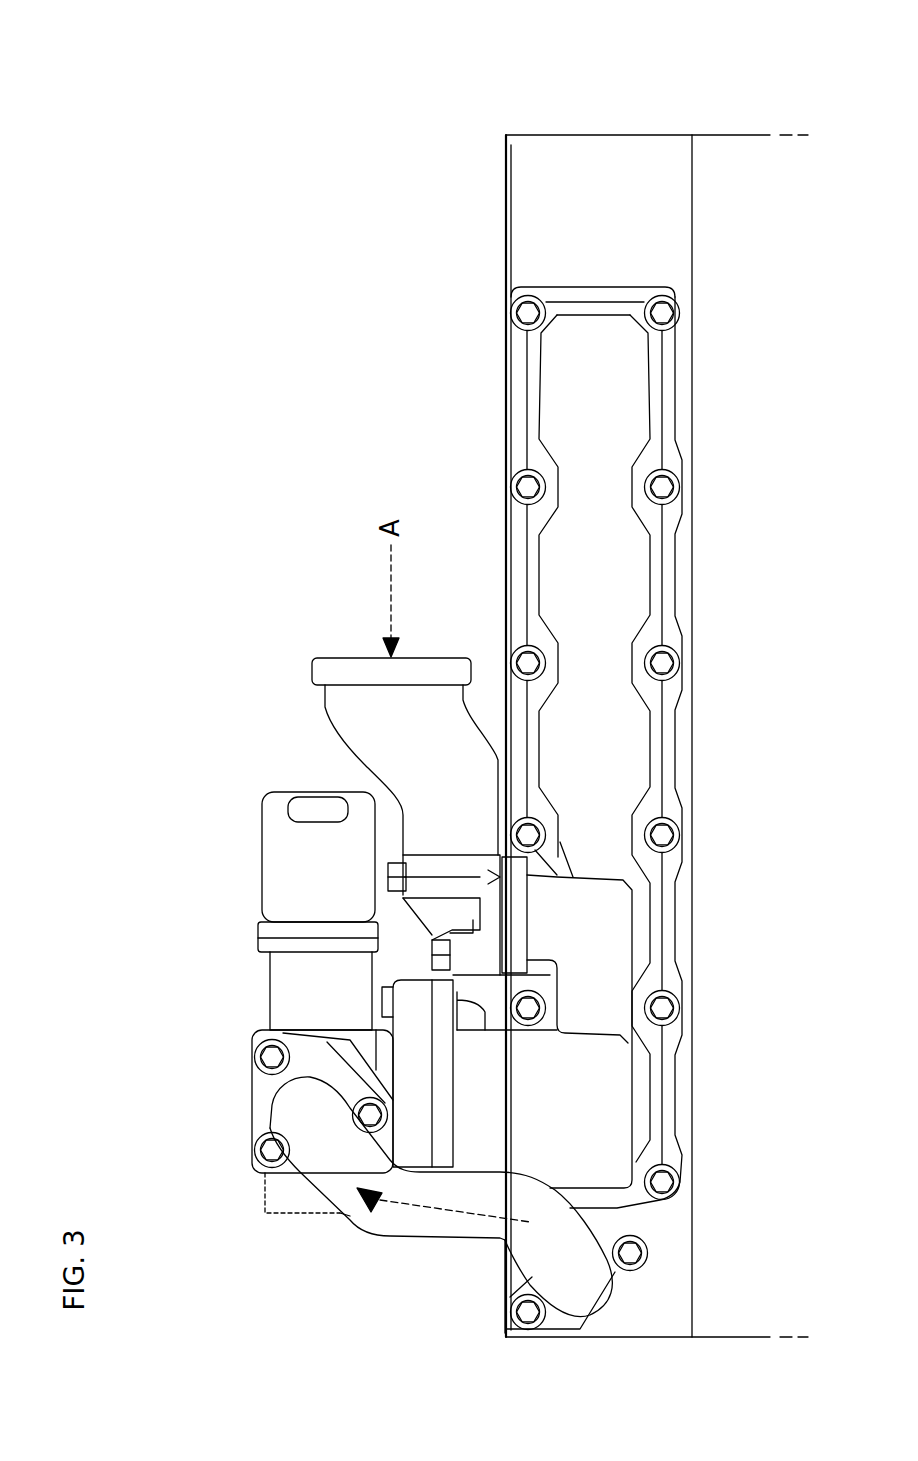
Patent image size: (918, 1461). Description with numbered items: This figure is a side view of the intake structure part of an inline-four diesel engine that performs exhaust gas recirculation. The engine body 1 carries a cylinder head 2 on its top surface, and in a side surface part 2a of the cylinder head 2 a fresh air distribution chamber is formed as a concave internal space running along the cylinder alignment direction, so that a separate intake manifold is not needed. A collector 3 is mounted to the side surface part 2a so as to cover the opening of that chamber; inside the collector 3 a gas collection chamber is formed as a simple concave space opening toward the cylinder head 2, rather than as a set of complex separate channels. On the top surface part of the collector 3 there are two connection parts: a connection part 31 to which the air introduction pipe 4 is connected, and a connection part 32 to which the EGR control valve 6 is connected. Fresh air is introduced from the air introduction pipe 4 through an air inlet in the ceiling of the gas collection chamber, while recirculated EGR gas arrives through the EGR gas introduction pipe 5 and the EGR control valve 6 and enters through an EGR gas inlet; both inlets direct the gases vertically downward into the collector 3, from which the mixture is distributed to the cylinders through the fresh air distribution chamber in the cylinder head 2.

The engine body 1 is at (760, 134).
The cylinder head 2 is at (500, 176).
The side surface part 2a is at (525, 245).
The collector 3 is at (622, 572).
The air introduction pipe 4 is at (324, 720).
The EGR gas introduction pipe 5 is at (345, 1235).
The EGR control valve 6 is at (262, 990).
The connection part 31 is at (388, 880).
The connection part 32 is at (416, 1057).